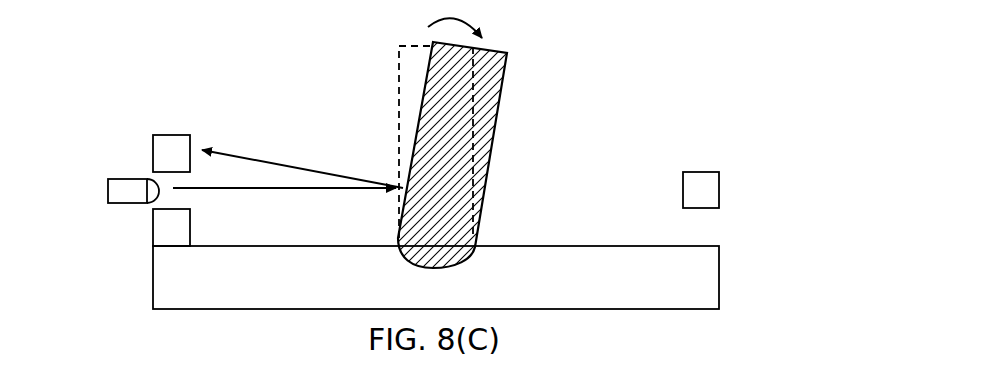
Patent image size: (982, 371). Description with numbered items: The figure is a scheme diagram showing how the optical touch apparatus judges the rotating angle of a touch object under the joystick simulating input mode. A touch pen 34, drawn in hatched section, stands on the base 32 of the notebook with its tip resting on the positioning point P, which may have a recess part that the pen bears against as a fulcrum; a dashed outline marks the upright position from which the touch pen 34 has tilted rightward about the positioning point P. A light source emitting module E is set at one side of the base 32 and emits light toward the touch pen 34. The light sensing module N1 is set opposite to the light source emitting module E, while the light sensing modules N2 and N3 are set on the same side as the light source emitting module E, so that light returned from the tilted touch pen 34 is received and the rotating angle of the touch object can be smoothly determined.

The base 32 is at (720, 283).
The touch pen 34 is at (492, 137).
The light source emitting module E is at (120, 190).
The light sensing module N1 is at (720, 190).
The light sensing module N2 is at (153, 143).
The light sensing module N3 is at (155, 231).
The positioning point P is at (428, 270).